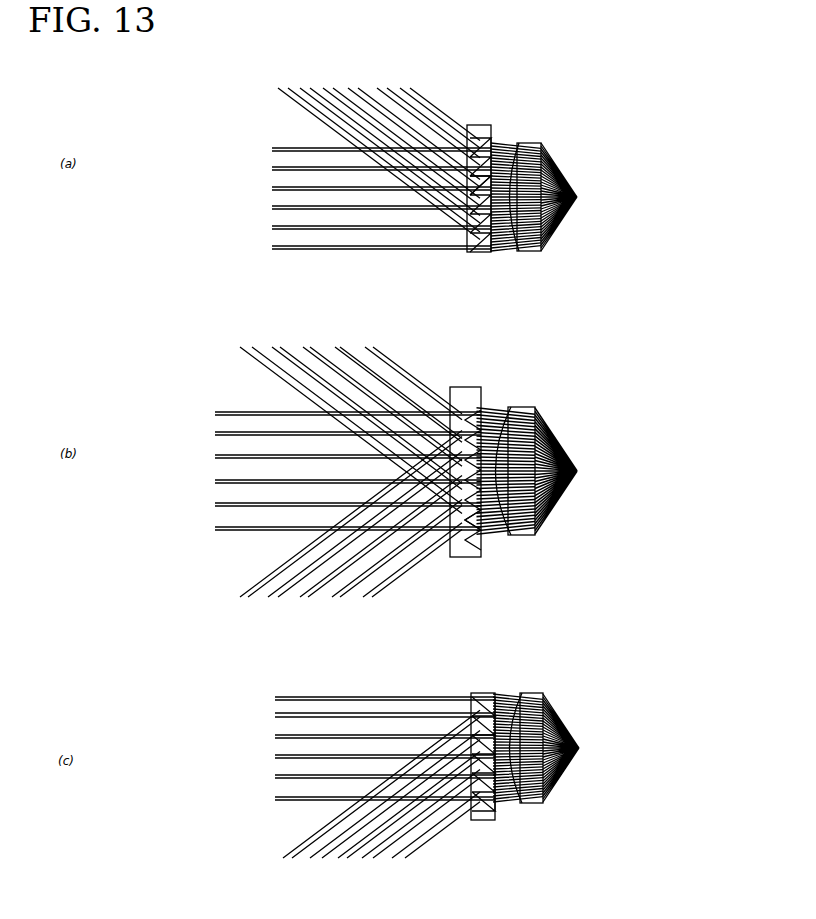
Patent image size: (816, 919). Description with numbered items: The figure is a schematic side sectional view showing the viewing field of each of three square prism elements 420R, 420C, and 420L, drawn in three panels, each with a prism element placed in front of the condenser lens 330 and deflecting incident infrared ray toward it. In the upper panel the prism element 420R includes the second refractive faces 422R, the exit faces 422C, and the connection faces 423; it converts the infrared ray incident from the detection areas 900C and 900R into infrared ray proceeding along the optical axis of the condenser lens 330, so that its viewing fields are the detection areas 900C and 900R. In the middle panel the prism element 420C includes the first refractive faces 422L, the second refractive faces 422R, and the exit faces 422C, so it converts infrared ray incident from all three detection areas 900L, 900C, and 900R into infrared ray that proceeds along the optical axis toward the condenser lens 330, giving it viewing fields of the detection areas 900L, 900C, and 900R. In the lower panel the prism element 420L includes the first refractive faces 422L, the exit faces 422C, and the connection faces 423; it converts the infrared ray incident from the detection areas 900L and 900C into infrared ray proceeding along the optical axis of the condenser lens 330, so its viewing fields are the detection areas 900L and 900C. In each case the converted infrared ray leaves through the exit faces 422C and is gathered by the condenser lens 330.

The detection area 900R is at (360, 282).
The detection area 900L is at (360, 660).
The detection area 900C is at (330, 474).
The prism element 420R is at (478, 250).
The prism element 420C is at (465, 392).
The prism element 420L is at (478, 692).
The second refractive faces 422R is at (478, 140).
The exit faces 422C is at (495, 146).
The first refractive faces 422L is at (480, 548).
The connection faces 423 is at (492, 142).
The condenser lens 330 is at (530, 248).